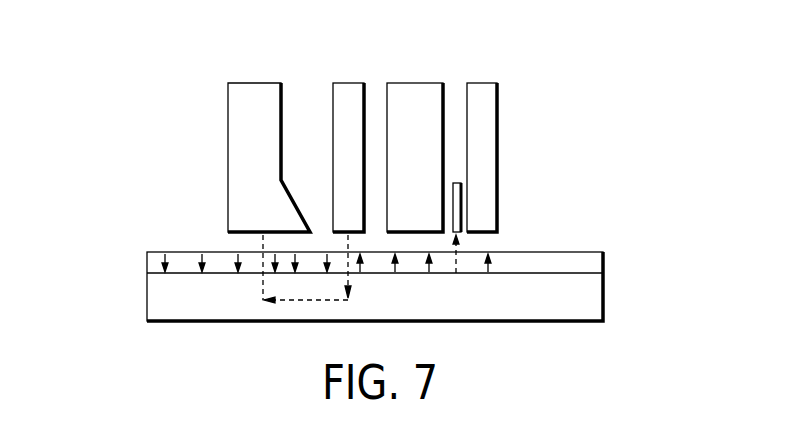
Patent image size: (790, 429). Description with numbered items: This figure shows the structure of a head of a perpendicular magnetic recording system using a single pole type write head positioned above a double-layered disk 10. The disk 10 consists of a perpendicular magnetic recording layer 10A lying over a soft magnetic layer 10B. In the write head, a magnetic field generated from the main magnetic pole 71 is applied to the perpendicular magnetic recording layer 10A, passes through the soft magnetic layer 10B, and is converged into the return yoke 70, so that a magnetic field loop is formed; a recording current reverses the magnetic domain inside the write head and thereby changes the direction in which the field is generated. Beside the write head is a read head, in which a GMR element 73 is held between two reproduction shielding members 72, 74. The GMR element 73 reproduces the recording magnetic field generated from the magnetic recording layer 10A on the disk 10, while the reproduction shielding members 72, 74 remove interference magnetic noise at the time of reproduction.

The double-layered disk 10 is at (147, 305).
The perpendicular magnetic recording layer 10A is at (147, 265).
The soft magnetic layer 10B is at (604, 300).
The return yoke 70 is at (261, 83).
The main magnetic pole 71 is at (347, 83).
The reproduction shielding member 72 is at (414, 83).
The GMR element 73 is at (462, 203).
The reproduction shielding member 74 is at (483, 83).